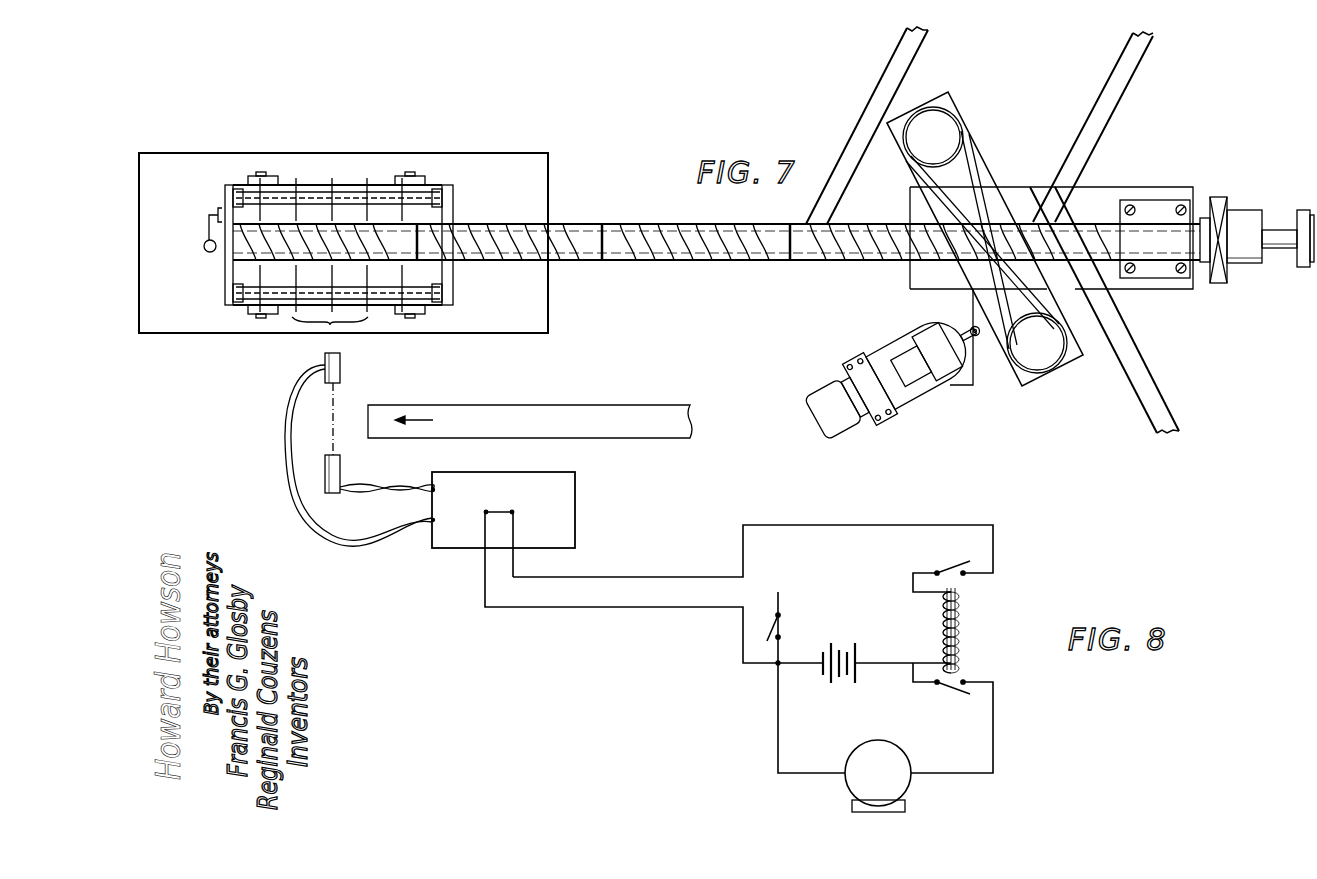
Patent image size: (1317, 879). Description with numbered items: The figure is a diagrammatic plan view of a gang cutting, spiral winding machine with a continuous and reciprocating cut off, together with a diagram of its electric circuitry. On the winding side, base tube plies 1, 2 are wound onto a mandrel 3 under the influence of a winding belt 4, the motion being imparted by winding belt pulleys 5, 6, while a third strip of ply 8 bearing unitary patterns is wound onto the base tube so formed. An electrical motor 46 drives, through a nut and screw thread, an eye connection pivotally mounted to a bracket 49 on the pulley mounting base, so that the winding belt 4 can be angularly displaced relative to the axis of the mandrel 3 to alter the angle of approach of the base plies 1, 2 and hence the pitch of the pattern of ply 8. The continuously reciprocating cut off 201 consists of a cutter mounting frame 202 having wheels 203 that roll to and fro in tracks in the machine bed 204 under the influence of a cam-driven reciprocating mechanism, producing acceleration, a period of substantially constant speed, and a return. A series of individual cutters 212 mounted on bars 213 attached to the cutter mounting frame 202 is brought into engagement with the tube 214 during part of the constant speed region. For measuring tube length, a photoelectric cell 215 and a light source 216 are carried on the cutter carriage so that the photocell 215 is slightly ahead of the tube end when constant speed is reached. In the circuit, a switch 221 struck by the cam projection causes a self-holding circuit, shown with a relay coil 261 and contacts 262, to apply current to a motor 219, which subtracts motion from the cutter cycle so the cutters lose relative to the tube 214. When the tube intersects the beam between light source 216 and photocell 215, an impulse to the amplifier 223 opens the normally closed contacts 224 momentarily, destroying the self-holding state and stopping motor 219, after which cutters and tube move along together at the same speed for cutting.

In FIG. 7, the base tube ply 1 is at (1098, 127).
In FIG. 7, the base tube ply 2 is at (1163, 406).
In FIG. 7, the mandrel 3 is at (1090, 220).
In FIG. 7, the winding belt 4 is at (983, 228).
In FIG. 7, the winding belt pulley 5 is at (940, 149).
In FIG. 7, the winding belt pulley 6 is at (1044, 355).
In FIG. 7, the third strip of ply 8 is at (858, 113).
In FIG. 7, the electrical motor 46 is at (820, 418).
In FIG. 7, the bracket 49 is at (979, 335).
In FIG. 7, the continuously reciprocating cut off 201 is at (347, 179).
In FIG. 7, the cutter mounting frame 202 is at (230, 184).
In FIG. 7, the wheels 203 is at (268, 177).
In FIG. 7, the machine bed 204 is at (202, 323).
In FIG. 7, the individual cutters 212 is at (330, 335).
In FIG. 7, the bars 213 is at (381, 198).
In FIG. 7, the tube 214 is at (625, 240).
In FIG. 7, the photoelectric cell 215 is at (342, 464).
In FIG. 7, the light source 216 is at (205, 251).
In FIG. 8, the motor 219 is at (890, 765).
In FIG. 8, the switch 221 is at (767, 627).
In FIG. 7, the amplifier 223 is at (577, 542).
In FIG. 7, the normally closed contacts 224 is at (515, 512).
In FIG. 8, the relay coil 261 is at (963, 627).
In FIG. 8, the relay contacts 262 is at (965, 563).